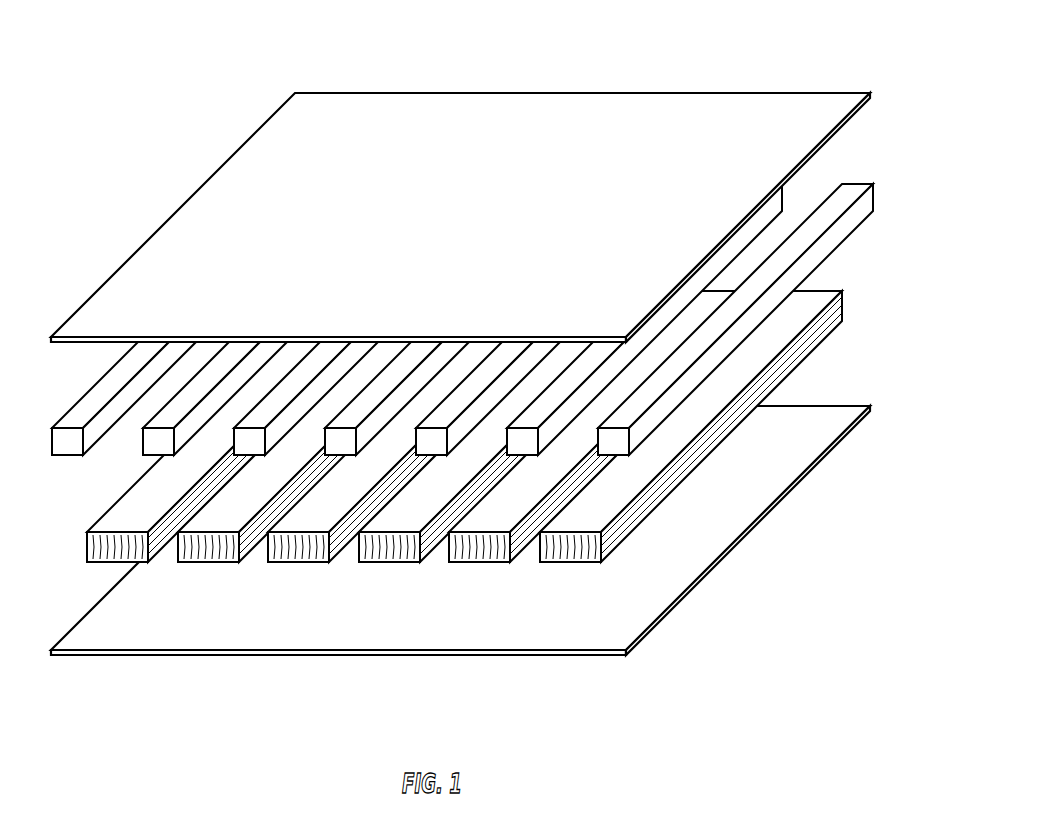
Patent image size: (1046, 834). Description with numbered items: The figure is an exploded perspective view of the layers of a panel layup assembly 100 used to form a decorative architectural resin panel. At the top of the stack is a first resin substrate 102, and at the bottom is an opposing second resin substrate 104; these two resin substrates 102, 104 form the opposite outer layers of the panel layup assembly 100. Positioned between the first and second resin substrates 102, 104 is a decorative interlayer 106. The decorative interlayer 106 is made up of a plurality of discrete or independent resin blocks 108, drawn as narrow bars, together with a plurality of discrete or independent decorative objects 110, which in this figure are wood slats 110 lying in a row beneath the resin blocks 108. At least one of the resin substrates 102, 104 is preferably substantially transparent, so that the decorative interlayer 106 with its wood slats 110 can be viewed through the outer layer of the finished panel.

The panel layup assembly 100 is at (467, 369).
The first resin substrate 102 is at (724, 97).
The second resin substrate 104 is at (157, 637).
The decorative interlayer 106 is at (467, 378).
The resin blocks 108 is at (83, 402).
The decorative objects 110 is at (98, 542).